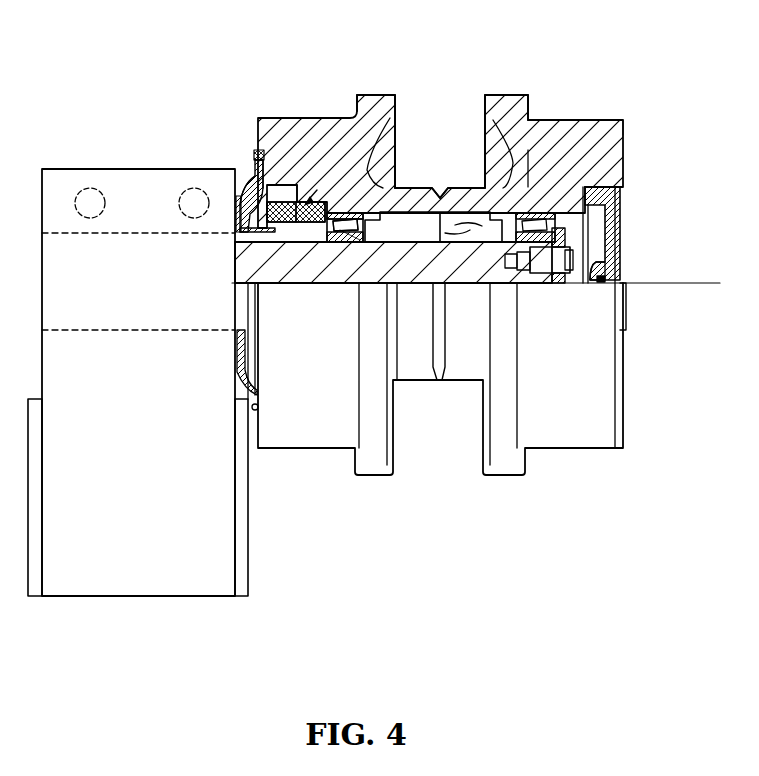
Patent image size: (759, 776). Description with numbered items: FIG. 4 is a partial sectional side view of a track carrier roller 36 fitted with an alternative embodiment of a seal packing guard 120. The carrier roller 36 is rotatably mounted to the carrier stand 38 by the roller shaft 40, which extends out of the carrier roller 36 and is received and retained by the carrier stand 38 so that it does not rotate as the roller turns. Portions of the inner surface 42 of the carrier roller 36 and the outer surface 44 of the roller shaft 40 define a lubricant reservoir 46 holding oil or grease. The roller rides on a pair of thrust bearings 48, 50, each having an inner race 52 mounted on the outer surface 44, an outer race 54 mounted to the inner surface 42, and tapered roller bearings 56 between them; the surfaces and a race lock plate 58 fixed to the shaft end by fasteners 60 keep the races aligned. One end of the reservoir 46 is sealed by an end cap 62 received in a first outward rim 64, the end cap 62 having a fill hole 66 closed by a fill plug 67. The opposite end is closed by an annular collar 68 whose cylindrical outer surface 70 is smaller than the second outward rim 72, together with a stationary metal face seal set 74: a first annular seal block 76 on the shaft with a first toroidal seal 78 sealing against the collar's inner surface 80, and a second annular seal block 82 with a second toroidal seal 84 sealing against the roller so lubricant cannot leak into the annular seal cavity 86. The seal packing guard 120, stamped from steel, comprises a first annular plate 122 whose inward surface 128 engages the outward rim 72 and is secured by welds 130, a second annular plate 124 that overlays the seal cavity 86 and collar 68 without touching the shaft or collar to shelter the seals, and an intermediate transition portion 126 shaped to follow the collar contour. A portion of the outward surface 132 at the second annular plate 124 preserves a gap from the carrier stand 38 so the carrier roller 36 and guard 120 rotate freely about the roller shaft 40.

The carrier roller 36 is at (557, 422).
The carrier stand 38 is at (97, 183).
The roller shaft 40 is at (413, 262).
The inner surface 42 is at (478, 222).
The outer surface 44 is at (478, 235).
The lubricant reservoir 46 is at (412, 223).
The thrust bearing 48 is at (343, 233).
The thrust bearing 50 is at (528, 210).
The inner race 52 is at (612, 125).
The outer race 54 is at (350, 130).
The tapered roller bearings 56 is at (395, 190).
The race lock plate 58 is at (572, 262).
The fasteners 60 is at (626, 318).
The end cap 62 is at (617, 193).
The first outward rim 64 is at (612, 187).
The fill hole 66 is at (625, 281).
The fill plug 67 is at (605, 283).
The annular collar 68 is at (253, 345).
The outer surface 70 is at (300, 207).
The second outward rim 72 is at (287, 205).
The metal face seal set 74 is at (335, 195).
The first annular seal block 76 is at (300, 232).
The first toroidal seal 78 is at (242, 212).
The inner surface 80 is at (252, 252).
The second annular seal block 82 is at (330, 226).
The second toroidal seal 84 is at (330, 207).
The annular seal cavity 86 is at (317, 190).
The seal packing guard 120 is at (240, 362).
The first annular plate 122 is at (252, 180).
The second annular plate 124 is at (240, 232).
The transition portion 126 is at (240, 195).
The inward surface 128 is at (258, 152).
The welds 130 is at (255, 160).
The outward surface 132 is at (236, 200).